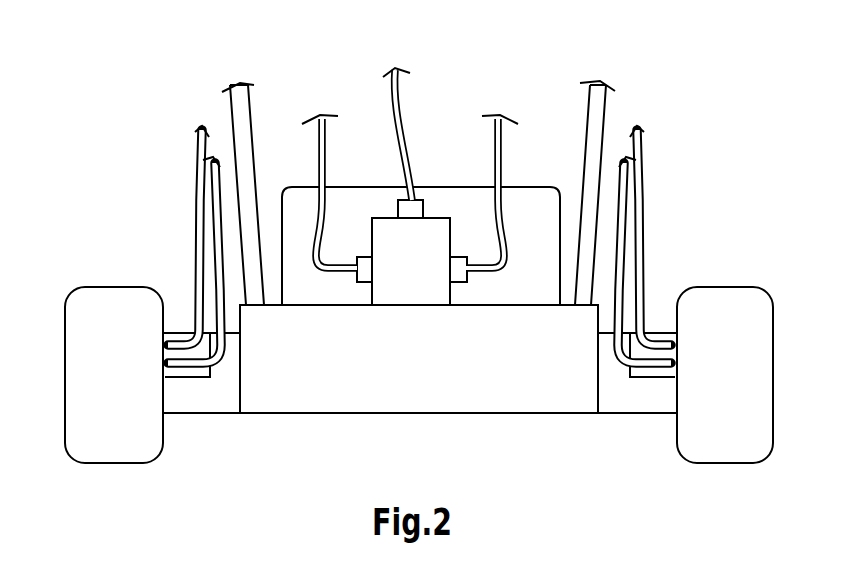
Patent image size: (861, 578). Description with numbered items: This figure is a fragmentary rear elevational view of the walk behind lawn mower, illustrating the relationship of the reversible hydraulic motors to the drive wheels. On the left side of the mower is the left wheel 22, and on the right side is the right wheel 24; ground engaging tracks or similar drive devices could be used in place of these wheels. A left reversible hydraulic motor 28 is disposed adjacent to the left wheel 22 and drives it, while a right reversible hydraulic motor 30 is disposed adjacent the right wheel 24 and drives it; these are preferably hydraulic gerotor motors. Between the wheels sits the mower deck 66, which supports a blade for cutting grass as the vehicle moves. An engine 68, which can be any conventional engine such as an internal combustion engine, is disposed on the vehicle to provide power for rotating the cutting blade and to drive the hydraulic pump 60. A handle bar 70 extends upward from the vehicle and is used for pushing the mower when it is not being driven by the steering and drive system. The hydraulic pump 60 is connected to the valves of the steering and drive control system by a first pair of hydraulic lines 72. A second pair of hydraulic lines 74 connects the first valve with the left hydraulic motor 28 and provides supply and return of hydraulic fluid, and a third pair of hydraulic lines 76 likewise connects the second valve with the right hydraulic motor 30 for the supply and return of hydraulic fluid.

The left wheel 22 is at (113, 310).
The right wheel 24 is at (733, 315).
The left reversible hydraulic motor 28 is at (177, 337).
The right reversible hydraulic motor 30 is at (662, 335).
The hydraulic pump 60 is at (418, 265).
The mower deck 66 is at (199, 395).
The engine 68 is at (533, 197).
The handle bar 70 is at (233, 100).
The first pair of hydraulic lines 72 is at (493, 127).
The second pair of hydraulic lines 74 is at (212, 222).
The third pair of hydraulic lines 76 is at (627, 197).